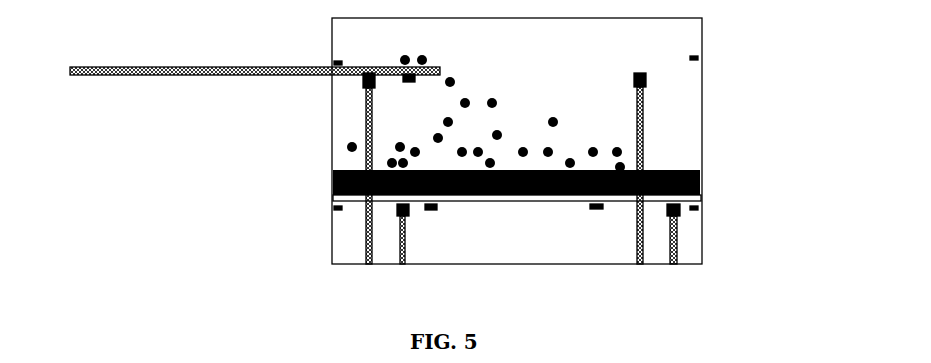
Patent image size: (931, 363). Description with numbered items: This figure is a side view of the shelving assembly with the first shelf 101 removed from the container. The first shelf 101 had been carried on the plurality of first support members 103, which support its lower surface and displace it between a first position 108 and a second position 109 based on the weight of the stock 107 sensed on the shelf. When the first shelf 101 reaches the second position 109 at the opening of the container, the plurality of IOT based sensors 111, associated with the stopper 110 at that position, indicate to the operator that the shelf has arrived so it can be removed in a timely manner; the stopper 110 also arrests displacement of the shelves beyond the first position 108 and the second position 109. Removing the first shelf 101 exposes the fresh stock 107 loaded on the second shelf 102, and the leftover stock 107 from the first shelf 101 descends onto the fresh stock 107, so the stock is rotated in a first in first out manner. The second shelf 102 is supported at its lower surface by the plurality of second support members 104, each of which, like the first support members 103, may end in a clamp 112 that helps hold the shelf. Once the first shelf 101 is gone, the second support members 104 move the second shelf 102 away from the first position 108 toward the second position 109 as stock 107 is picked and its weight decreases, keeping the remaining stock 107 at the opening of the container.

The first shelf 101 is at (203, 76).
The second shelf 102 is at (700, 190).
The first support members 103 is at (372, 254).
The second support members 104 is at (405, 230).
The stock 107 is at (366, 172).
The first position 108 is at (321, 208).
The second position 109 is at (320, 56).
The stopper 110 is at (700, 58).
The sensors 111 is at (758, 50).
The clamp 112 is at (646, 78).